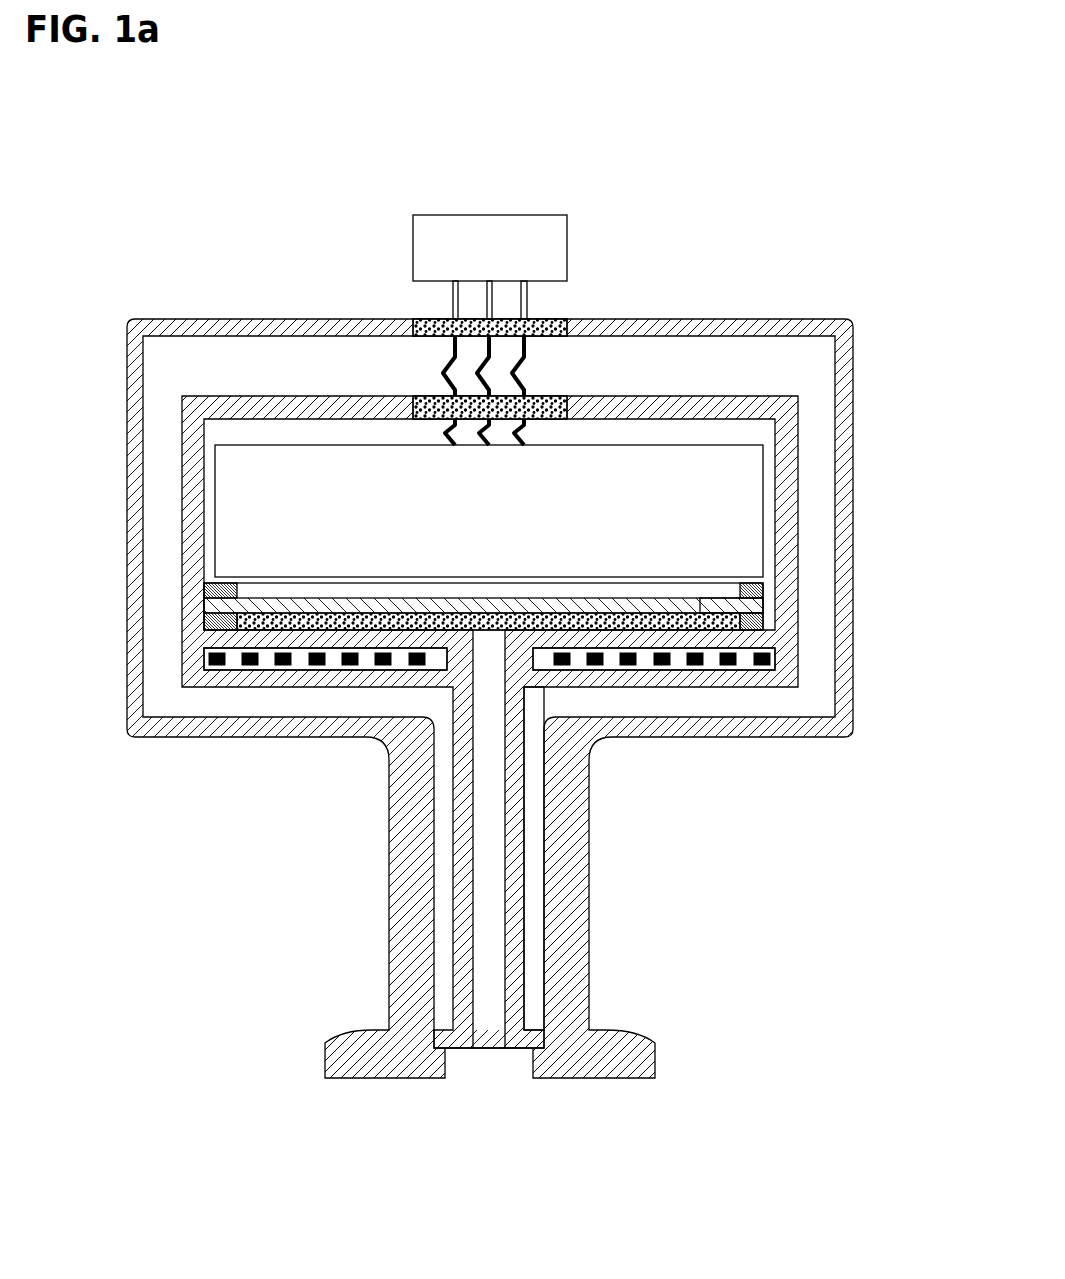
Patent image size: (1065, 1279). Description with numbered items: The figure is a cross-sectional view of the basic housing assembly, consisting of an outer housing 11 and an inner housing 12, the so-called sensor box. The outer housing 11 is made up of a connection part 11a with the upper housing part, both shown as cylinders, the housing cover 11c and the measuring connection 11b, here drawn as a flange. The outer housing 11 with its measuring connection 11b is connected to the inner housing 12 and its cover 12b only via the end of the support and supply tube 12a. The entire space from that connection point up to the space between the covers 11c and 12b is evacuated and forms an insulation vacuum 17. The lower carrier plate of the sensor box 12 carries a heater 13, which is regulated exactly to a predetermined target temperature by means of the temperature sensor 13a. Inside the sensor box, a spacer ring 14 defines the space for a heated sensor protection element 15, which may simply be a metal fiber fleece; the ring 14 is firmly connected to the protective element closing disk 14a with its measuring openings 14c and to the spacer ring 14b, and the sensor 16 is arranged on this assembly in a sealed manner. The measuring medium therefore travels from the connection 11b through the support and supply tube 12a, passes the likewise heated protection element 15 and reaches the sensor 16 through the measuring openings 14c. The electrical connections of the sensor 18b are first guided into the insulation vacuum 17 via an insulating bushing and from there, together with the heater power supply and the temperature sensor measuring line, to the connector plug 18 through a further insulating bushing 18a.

The outer housing 11 is at (135, 518).
The connection part 11a is at (412, 890).
The measuring connection 11b is at (375, 1060).
The housing cover 11c is at (195, 328).
The inner housing 12 is at (788, 528).
The support and supply tube 12a is at (513, 897).
The cover 12b is at (735, 407).
The heater 13 is at (400, 729).
The temperature sensor 13a is at (217, 658).
The spacer ring 14 is at (575, 651).
The protective element closing disk 14a is at (723, 605).
The spacer ring 14b is at (757, 592).
The measuring openings 14c is at (290, 606).
The sensor protection element 15 is at (660, 623).
The sensor 16 is at (745, 483).
The insulation vacuum 17 is at (535, 990).
The connector plug 18 is at (532, 236).
The insulating bushing 18a is at (447, 358).
The electrical connections of the sensor 18b is at (443, 429).